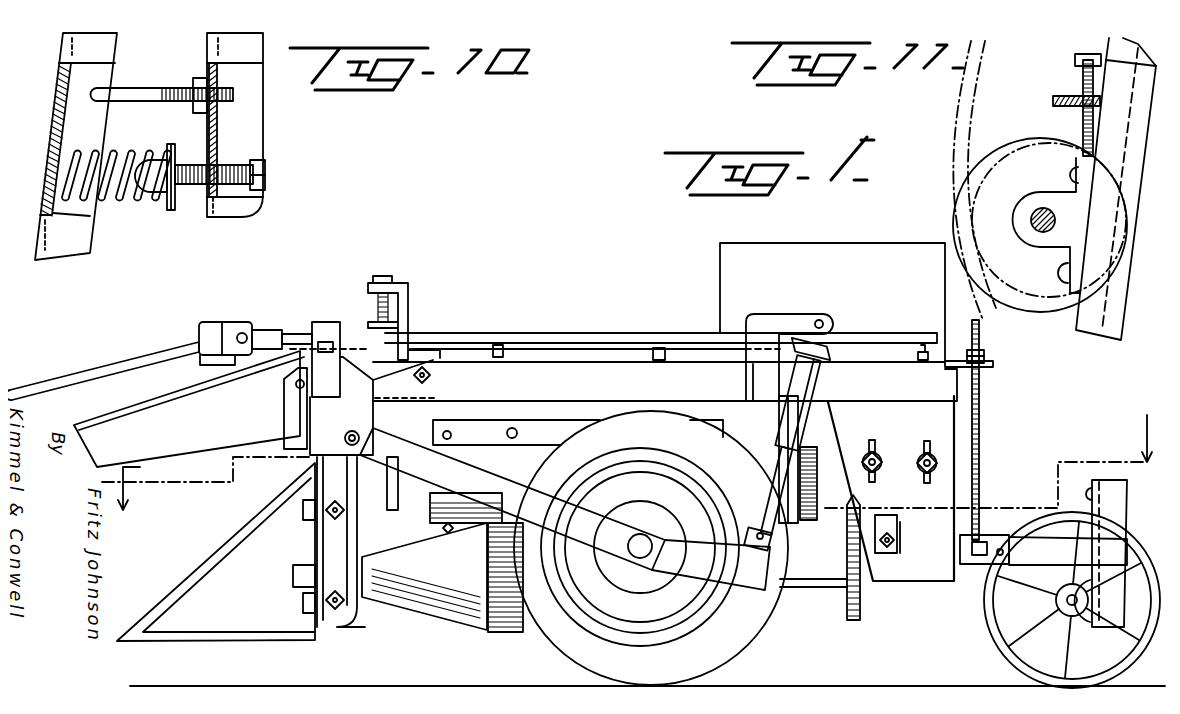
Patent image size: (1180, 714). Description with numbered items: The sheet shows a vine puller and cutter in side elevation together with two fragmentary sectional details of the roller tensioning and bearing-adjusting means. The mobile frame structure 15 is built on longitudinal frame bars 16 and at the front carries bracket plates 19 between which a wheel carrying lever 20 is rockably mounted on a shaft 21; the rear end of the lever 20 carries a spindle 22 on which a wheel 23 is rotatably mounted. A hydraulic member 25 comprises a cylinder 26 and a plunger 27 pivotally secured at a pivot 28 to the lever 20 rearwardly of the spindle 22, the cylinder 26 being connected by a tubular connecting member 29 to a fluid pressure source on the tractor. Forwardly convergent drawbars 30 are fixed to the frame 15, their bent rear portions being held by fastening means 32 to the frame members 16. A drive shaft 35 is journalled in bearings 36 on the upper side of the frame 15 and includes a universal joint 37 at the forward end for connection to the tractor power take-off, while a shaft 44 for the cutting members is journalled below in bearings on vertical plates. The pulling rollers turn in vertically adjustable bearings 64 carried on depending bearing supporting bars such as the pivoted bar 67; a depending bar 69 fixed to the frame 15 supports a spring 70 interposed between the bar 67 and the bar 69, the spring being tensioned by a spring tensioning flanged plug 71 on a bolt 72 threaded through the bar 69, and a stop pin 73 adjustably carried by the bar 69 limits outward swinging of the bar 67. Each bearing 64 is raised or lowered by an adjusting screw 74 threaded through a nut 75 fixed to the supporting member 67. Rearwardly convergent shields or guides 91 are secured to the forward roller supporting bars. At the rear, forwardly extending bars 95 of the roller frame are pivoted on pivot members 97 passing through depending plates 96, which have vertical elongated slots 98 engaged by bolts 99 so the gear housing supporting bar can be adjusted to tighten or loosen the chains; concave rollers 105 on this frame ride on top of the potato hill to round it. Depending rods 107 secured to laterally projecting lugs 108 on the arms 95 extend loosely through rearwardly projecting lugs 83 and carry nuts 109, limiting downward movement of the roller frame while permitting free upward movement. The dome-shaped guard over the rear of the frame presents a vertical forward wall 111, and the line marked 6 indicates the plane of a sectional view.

In FIG. 1, the section line 6 is at (627, 452).
In FIG. 1, the mobile frame structure 15 is at (555, 372).
In FIG. 1, the longitudinal frame bars 16 is at (592, 364).
In FIG. 1, the bracket plates 19 is at (302, 432).
In FIG. 1, the wheel carrying lever 20 is at (527, 489).
In FIG. 1, the shaft 21 is at (352, 431).
In FIG. 1, the spindle 22 is at (632, 542).
In FIG. 1, the wheel 23 is at (557, 633).
In FIG. 1, the hydraulic member 25 is at (832, 340).
In FIG. 1, the cylinder 26 is at (811, 376).
In FIG. 1, the plunger 27 is at (756, 485).
In FIG. 1, the pivot 28 is at (757, 582).
In FIG. 1, the tubular connecting member 29 is at (530, 343).
In FIG. 1, the drawbars 30 is at (209, 419).
In FIG. 1, the fastening means 32 is at (430, 375).
In FIG. 1, the drive shaft 35 is at (460, 333).
In FIG. 1, the bearings 36 is at (325, 325).
In FIG. 1, the universal joint 37 is at (232, 292).
In FIG. 1, the shaft 44 is at (778, 513).
In FIG. 11, the bearings 64 is at (1029, 226).
In FIG. 10, the bearing supporting bar 67 is at (60, 255).
In FIG. 11, the bearing supporting bar 67 is at (1082, 326).
In FIG. 10, the depending bar 69 is at (205, 215).
In FIG. 10, the spring 70 is at (109, 192).
In FIG. 10, the spring tensioning flanged plug 71 is at (150, 189).
In FIG. 10, the bolt 72 is at (226, 165).
In FIG. 10, the stop pin 73 is at (140, 88).
In FIG. 11, the adjusting screw 74 is at (1072, 143).
In FIG. 11, the nut 75 is at (1044, 92).
In FIG. 1, the rearwardly projecting lug 83 is at (994, 364).
In FIG. 1, the shields or guides 91 is at (230, 552).
In FIG. 1, the forwardly extending bars 95 is at (1005, 547).
In FIG. 1, the depending plates 96 is at (935, 460).
In FIG. 1, the pivot members 97 is at (890, 555).
In FIG. 1, the vertical elongated slots 98 is at (870, 432).
In FIG. 1, the bolts 99 is at (910, 457).
In FIG. 1, the concave rollers 105 is at (1004, 652).
In FIG. 1, the depending rods 107 is at (986, 433).
In FIG. 1, the laterally projecting lugs 108 is at (982, 522).
In FIG. 1, the nuts 109 is at (980, 350).
In FIG. 1, the vertical forward wall 111 is at (823, 240).